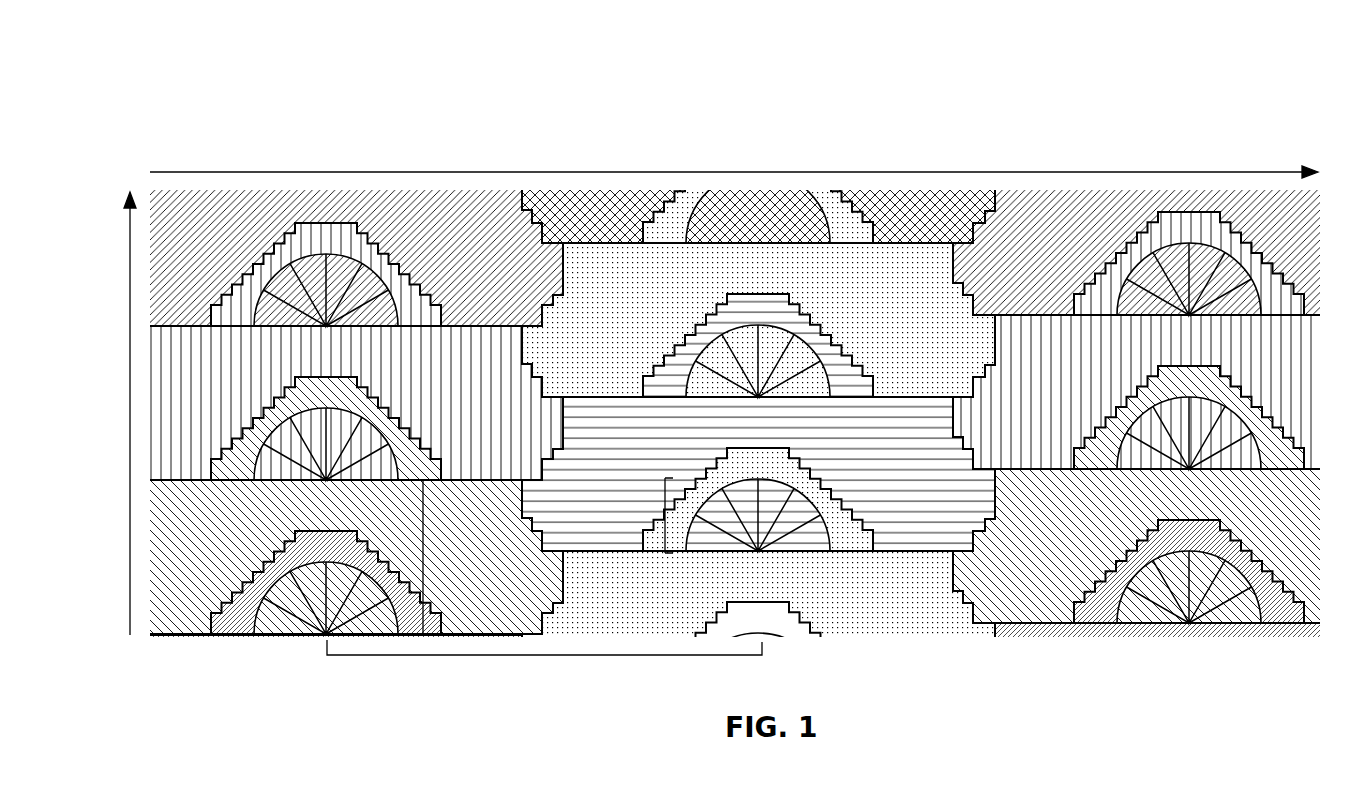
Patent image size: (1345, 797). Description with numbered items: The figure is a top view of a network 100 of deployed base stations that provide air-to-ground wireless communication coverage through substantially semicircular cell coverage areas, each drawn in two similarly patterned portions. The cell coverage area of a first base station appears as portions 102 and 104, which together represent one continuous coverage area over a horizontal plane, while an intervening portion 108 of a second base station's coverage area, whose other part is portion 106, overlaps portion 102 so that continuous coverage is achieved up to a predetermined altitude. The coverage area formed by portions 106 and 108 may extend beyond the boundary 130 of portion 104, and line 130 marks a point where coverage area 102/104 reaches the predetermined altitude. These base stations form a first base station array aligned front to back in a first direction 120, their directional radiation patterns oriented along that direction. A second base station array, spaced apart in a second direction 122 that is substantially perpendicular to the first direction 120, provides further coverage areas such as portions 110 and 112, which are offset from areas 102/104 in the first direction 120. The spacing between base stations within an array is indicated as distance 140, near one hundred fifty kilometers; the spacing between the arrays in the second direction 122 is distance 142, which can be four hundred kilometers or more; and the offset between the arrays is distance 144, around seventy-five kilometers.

The network 100 is at (1198, 88).
The cell coverage area portion 102 is at (329, 481).
The cell coverage area portion 104 is at (152, 482).
The cell coverage area portion 106 is at (327, 635).
The cell coverage area portion 108 is at (175, 635).
The cell coverage area portion 110 is at (760, 553).
The cell coverage area portion 112 is at (585, 553).
The first direction 120 is at (128, 357).
The second direction 122 is at (657, 172).
The boundary 130 is at (397, 415).
The distance 140 is at (423, 557).
The distance 142 is at (540, 655).
The distance 144 is at (663, 493).